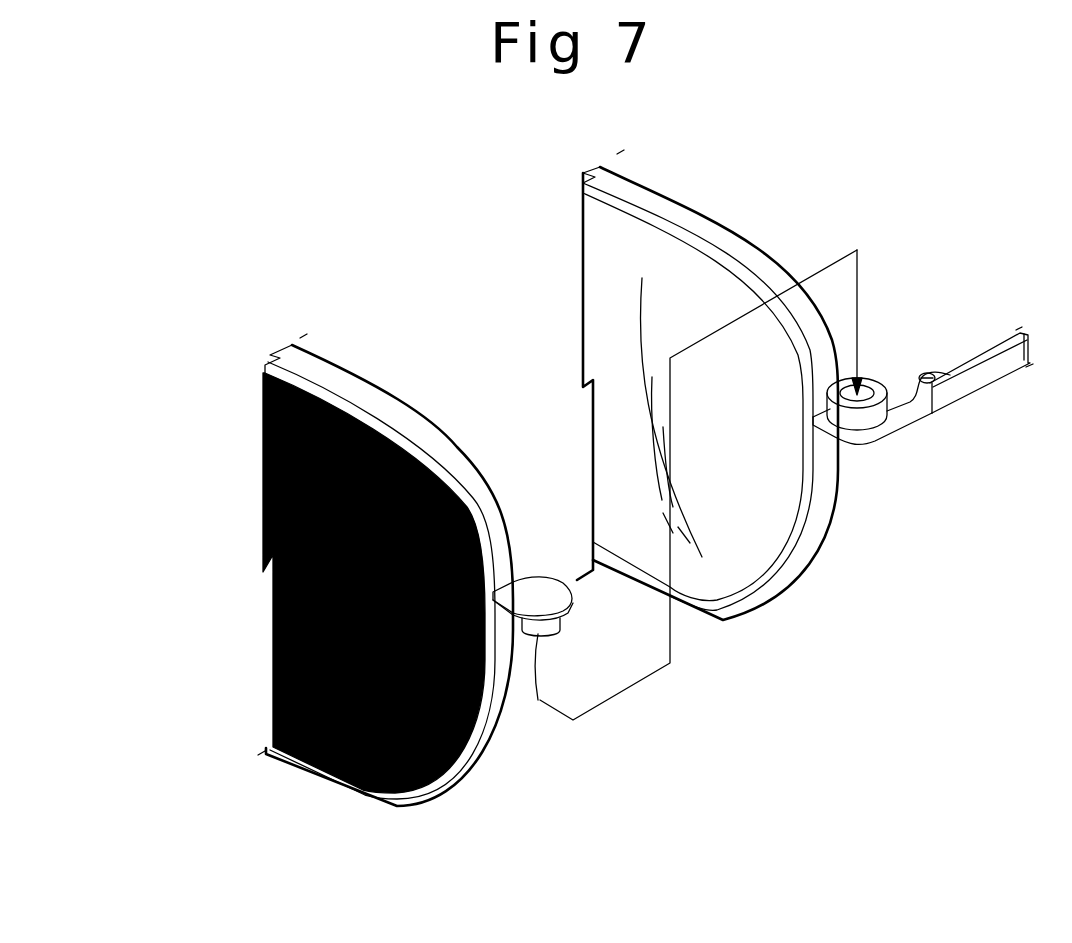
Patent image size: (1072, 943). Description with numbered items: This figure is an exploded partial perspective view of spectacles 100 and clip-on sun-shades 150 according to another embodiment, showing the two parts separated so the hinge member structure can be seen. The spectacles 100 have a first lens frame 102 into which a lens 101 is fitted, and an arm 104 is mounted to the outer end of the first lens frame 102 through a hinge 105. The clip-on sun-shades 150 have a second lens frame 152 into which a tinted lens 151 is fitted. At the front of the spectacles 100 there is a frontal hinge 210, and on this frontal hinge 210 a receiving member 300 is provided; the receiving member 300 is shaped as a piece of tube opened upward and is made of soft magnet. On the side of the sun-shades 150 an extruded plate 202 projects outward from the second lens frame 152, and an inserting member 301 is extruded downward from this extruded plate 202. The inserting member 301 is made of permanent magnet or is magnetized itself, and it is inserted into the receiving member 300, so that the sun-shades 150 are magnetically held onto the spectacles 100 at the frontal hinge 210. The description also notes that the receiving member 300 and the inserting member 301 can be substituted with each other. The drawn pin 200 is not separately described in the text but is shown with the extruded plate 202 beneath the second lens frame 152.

The spectacles 100 is at (786, 441).
The lens 101 is at (740, 585).
The first lens frame 102 is at (823, 517).
The arm 104 is at (957, 393).
The hinge 105 is at (941, 347).
The clip-on sun-shades 150 is at (321, 621).
The tinted lens 151 is at (363, 792).
The second lens frame 152 is at (477, 748).
The pin 200 is at (555, 600).
The extruded plate 202 is at (538, 583).
The frontal hinge 210 is at (857, 437).
The receiving member 300 is at (870, 422).
The inserting member 301 is at (538, 700).